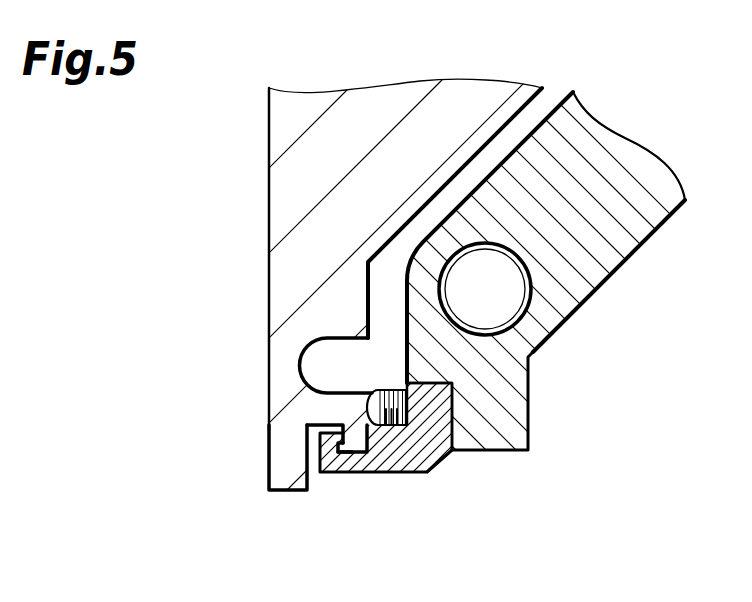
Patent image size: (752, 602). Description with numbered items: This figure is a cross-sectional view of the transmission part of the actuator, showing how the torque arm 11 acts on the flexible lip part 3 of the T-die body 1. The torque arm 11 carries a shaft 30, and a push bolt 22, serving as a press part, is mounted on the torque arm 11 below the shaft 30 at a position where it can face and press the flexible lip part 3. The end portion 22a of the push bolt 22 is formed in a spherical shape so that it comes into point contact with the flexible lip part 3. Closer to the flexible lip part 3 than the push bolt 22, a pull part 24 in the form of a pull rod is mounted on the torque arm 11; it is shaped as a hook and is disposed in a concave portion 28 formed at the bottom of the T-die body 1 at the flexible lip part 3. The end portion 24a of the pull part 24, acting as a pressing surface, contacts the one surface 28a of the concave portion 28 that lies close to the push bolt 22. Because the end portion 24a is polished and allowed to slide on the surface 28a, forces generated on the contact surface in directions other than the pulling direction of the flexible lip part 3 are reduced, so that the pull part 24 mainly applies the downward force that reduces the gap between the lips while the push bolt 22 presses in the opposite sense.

The T-die body 1 is at (348, 331).
The flexible lip part 3 is at (283, 466).
The torque arm 11 is at (404, 275).
The push bolt 22 is at (437, 455).
The end portion of the push bolt 22a is at (380, 427).
The pull part 24 is at (280, 459).
The end portion of the pull part 24a is at (333, 440).
The concave portion 28 is at (401, 461).
The one surface of the concave portion 28a is at (357, 436).
The shaft 30 is at (492, 292).